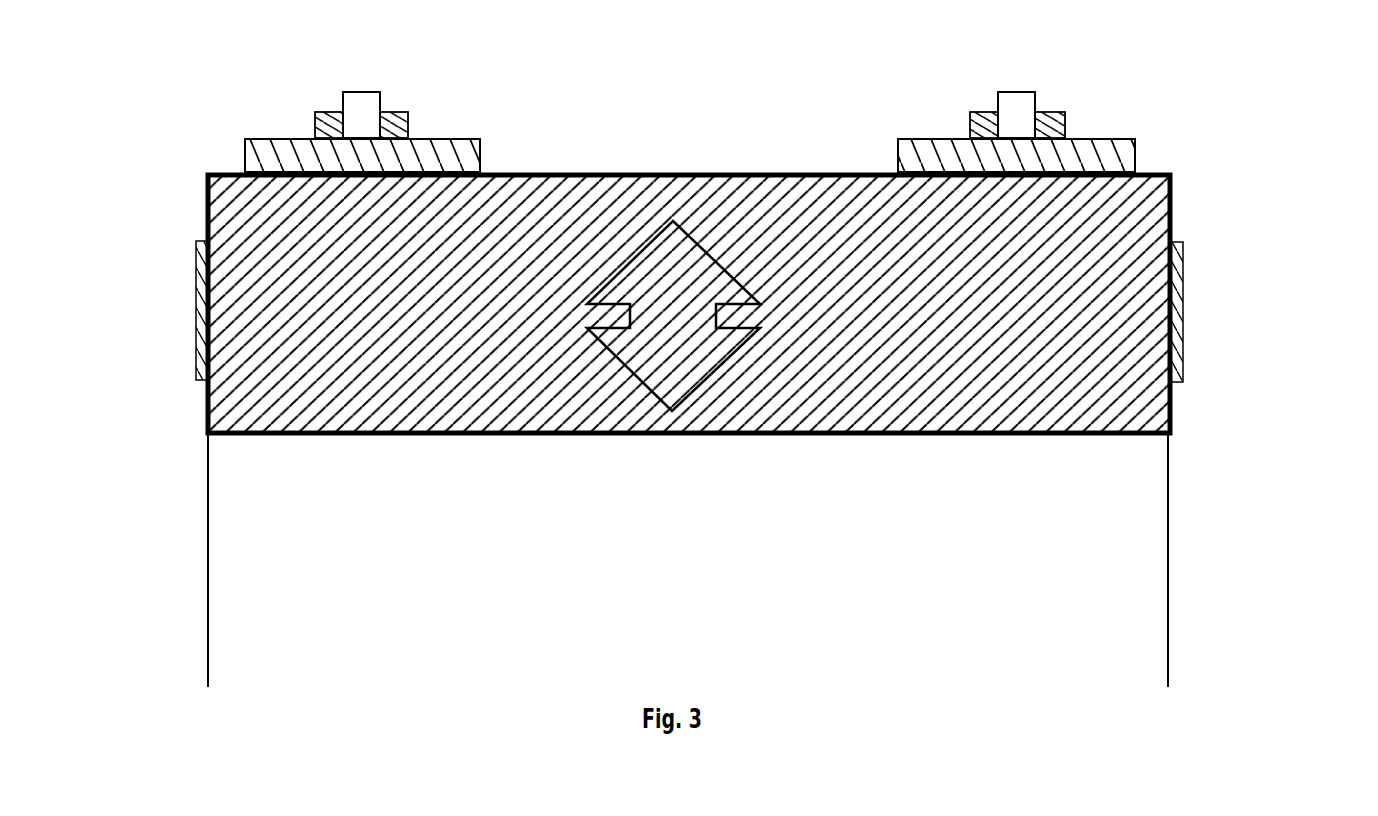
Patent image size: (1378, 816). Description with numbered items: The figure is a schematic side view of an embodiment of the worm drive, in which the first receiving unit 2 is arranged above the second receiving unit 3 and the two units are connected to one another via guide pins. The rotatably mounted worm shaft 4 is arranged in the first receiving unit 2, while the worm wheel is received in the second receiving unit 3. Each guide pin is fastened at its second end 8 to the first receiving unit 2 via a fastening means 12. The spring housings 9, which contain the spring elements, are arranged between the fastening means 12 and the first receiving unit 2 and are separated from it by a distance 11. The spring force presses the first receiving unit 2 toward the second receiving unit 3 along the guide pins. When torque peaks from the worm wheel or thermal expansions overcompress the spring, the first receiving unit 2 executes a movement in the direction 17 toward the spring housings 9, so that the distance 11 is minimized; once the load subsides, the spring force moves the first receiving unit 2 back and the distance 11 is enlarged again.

The first receiving unit 2 is at (1170, 215).
The second receiving unit 3 is at (1167, 598).
The worm shaft 4 is at (1187, 325).
The second end 8 is at (333, 104).
The spring housing 9 is at (893, 152).
The distance 11 is at (1150, 172).
The fastening means 12 is at (415, 122).
The direction 17 is at (670, 277).